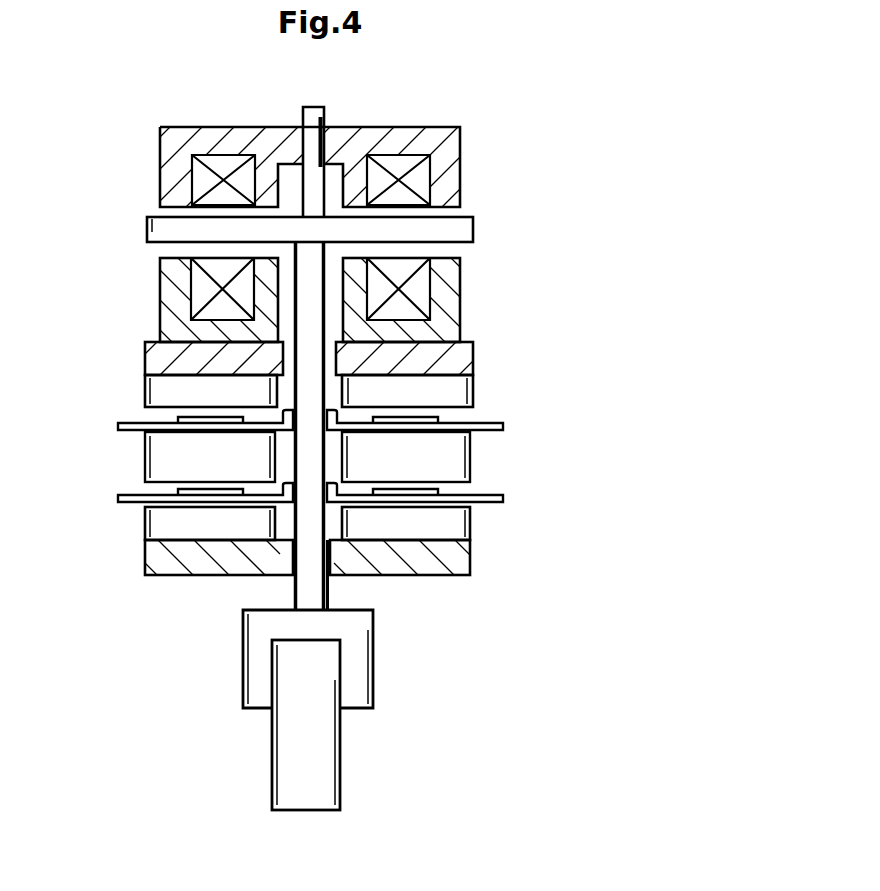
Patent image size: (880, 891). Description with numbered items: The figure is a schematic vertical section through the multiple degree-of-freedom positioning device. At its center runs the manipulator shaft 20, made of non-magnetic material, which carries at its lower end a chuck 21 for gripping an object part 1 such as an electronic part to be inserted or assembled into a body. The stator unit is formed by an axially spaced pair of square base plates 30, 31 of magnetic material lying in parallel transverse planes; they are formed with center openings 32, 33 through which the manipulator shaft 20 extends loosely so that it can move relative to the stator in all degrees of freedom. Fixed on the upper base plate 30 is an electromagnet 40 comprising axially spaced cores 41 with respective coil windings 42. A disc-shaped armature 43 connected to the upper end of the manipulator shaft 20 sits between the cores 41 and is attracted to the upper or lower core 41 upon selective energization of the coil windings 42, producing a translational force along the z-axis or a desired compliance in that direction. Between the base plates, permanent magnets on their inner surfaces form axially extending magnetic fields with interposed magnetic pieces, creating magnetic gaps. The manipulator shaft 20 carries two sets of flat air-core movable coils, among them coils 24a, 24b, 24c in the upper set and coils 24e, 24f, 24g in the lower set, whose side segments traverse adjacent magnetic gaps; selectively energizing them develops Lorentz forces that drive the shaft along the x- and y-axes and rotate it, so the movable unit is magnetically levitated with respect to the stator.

The object part 1 is at (285, 760).
The manipulator shaft 20 is at (303, 312).
The chuck 21 is at (368, 680).
The movable coil 24a is at (120, 426).
The movable coil 24b is at (207, 420).
The movable coil 24c is at (487, 425).
The movable coil 24e is at (120, 497).
The movable coil 24f is at (202, 493).
The movable coil 24g is at (493, 498).
The upper base plate 30 is at (472, 343).
The lower base plate 31 is at (470, 558).
The center opening 32 is at (333, 357).
The center opening 33 is at (330, 577).
The electromagnet 40 is at (460, 129).
The core 41 is at (167, 153).
The coil winding 42 is at (202, 192).
The armature 43 is at (460, 227).